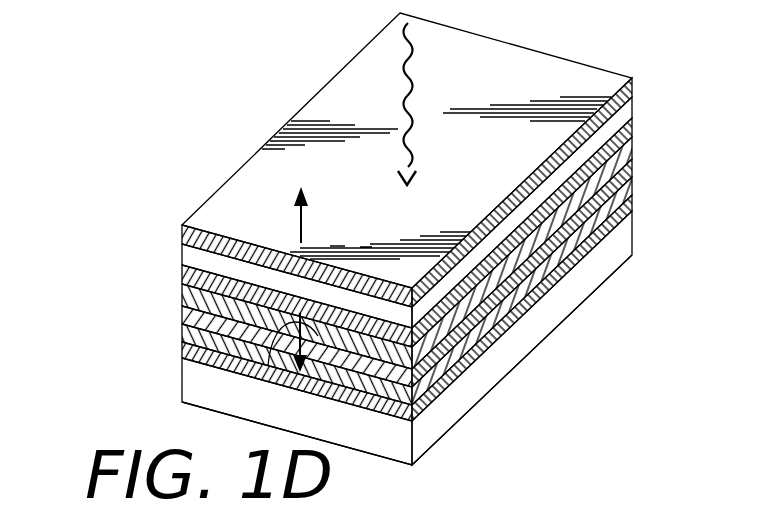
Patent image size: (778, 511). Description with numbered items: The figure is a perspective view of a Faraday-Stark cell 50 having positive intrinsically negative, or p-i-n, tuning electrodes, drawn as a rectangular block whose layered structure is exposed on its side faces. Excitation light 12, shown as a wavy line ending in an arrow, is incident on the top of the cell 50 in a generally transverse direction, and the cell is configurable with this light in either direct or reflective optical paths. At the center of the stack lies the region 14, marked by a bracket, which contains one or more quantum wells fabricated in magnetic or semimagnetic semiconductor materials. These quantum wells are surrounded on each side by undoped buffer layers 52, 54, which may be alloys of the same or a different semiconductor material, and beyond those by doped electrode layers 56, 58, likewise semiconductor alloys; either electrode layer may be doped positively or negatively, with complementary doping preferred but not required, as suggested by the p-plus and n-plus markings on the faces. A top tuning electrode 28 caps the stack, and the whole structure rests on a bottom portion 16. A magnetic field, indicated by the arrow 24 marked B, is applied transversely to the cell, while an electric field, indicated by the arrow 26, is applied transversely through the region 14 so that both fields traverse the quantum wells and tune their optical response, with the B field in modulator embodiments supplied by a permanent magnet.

The excitation light 12 is at (410, 80).
The central region having quantum wells 14 is at (640, 131).
The substrate 16 is at (605, 277).
The magnetic field arrow 24 is at (296, 212).
The electric field arrow 26 is at (271, 366).
The top tuning electrode 28 is at (636, 85).
The Faraday-Stark cell having p-i-n tuning electrodes 50 is at (140, 329).
The undoped buffer layer 52 is at (634, 132).
The undoped buffer layer 54 is at (638, 209).
The doped electrode layer 56 is at (634, 113).
The doped electrode layer 58 is at (622, 230).